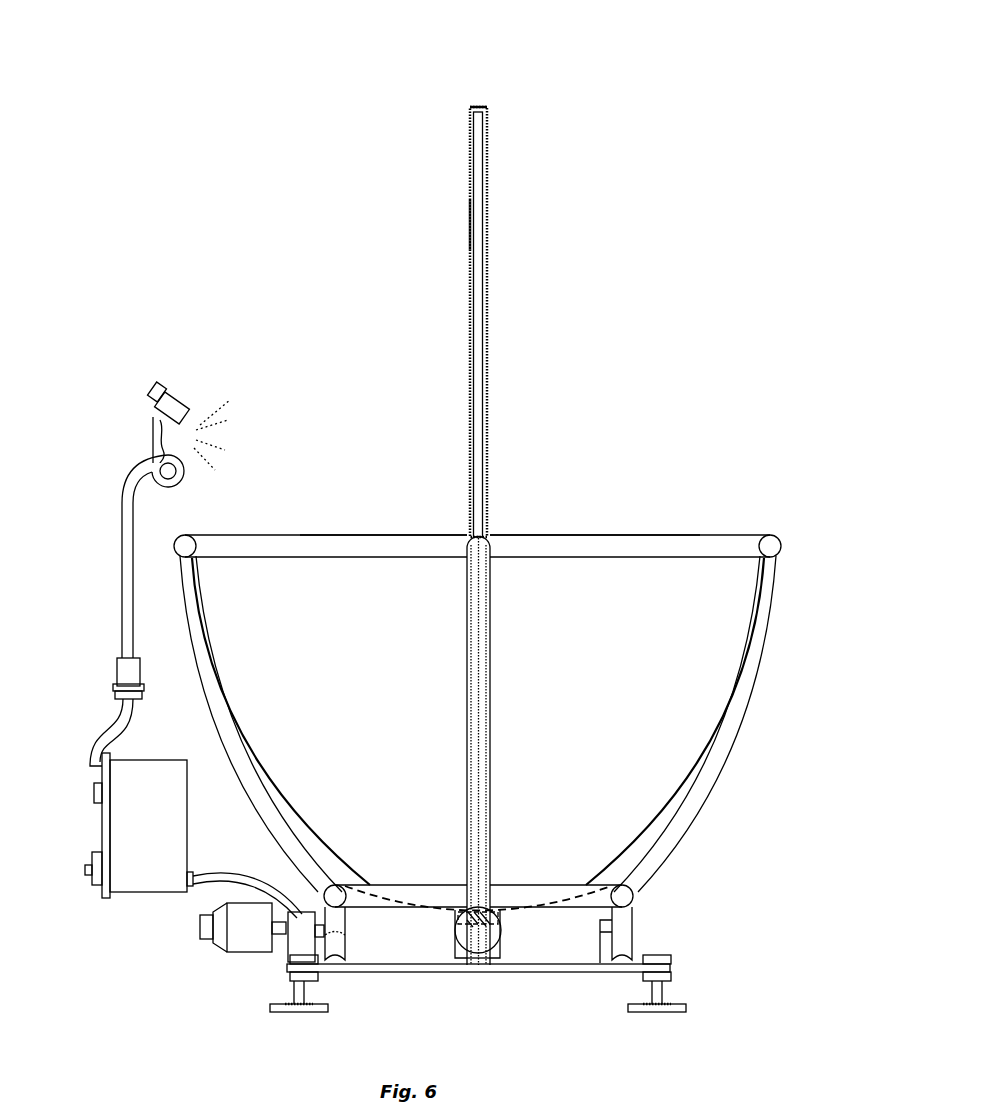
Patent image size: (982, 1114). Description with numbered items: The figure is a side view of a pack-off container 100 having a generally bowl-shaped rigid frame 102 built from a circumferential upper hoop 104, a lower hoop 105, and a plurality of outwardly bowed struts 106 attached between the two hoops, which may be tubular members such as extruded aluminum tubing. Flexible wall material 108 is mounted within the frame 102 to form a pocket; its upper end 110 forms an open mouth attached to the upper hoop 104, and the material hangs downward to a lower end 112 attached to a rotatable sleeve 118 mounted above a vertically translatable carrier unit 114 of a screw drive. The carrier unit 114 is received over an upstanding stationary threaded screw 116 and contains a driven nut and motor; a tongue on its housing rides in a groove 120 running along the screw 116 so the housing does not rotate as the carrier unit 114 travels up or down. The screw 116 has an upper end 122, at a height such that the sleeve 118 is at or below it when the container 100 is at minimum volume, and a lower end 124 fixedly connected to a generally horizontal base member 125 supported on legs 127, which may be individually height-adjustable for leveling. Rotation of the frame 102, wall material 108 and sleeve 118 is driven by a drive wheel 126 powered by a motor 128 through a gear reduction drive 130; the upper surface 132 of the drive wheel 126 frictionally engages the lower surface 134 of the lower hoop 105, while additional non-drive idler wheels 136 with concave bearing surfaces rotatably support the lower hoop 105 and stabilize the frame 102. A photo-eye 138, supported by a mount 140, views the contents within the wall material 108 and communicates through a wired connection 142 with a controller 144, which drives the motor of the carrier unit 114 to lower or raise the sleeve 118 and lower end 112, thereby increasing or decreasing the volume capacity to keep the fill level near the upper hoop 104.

The pack-off container 100 is at (260, 150).
The frame 102 is at (770, 538).
The upper hoop 104 is at (600, 540).
The lower hoop 105 is at (410, 900).
The outwardly bowed struts 106 is at (245, 725).
The flexible wall material 108 is at (300, 850).
The upper end 110 is at (205, 546).
The lower end 112 is at (500, 935).
The carrier unit 114 is at (470, 940).
The threaded screw 116 is at (487, 345).
The rotatable sleeve 118 is at (455, 935).
The groove 120 is at (476, 226).
The upper end 122 is at (478, 105).
The lower end 124 is at (480, 966).
The base member 125 is at (345, 975).
The drive wheel 126 is at (340, 950).
The legs 127 is at (290, 1006).
The motor 128 is at (300, 942).
The gear reduction drive 130 is at (240, 930).
The upper surface 132 is at (235, 880).
The lower surface 134 is at (590, 920).
The idler wheels 136 is at (500, 907).
The photo-eye 138 is at (185, 395).
The mount 140 is at (121, 540).
The wired connection 142 is at (115, 705).
The controller 144 is at (145, 760).